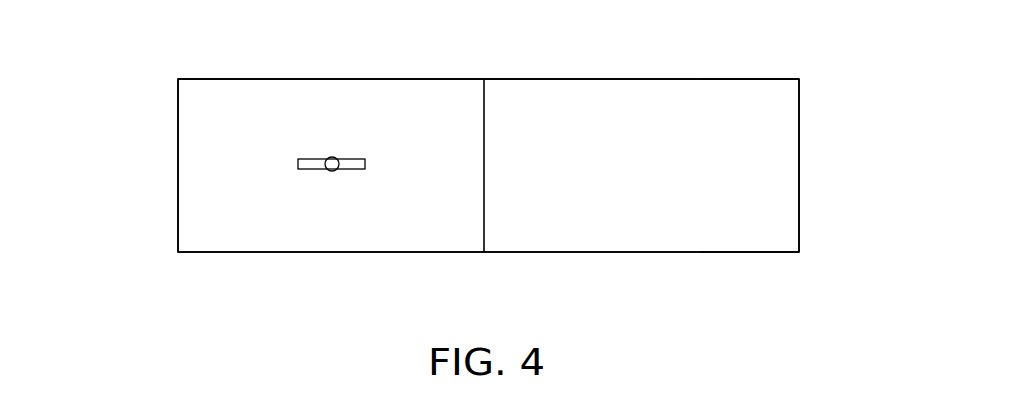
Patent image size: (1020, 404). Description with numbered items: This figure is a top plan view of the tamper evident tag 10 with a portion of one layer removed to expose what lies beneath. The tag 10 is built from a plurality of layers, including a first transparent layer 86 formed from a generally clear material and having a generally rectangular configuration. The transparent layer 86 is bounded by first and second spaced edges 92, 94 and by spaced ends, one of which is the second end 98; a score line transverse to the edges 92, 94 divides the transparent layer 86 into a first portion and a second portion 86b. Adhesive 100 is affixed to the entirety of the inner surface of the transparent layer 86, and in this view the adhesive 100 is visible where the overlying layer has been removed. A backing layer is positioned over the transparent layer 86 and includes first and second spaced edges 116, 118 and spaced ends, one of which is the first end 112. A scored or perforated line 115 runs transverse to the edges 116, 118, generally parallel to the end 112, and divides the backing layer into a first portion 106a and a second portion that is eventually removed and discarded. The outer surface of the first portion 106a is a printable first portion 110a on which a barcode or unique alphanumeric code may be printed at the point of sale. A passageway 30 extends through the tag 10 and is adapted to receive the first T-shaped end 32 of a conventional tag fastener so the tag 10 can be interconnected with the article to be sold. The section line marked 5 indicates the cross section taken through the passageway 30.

The tag 10 is at (143, 243).
The section line 5- 5 is at (178, 159).
The passageway 30 is at (341, 159).
The first T-shaped end 32 is at (309, 169).
The first transparent layer 86 is at (768, 256).
The second portion of transparent layer 86b is at (750, 75).
The first edge of transparent layer 92 is at (640, 79).
The second edge of transparent layer 94 is at (686, 252).
The second end of transparent layer 98 is at (799, 190).
The adhesive 100 is at (696, 190).
The first portion of backing layer 106a is at (228, 122).
The first portion of outer surface of backing layer 110a is at (450, 220).
The first end of backing layer 112 is at (178, 198).
The perforated line 115 is at (484, 170).
The first edge of backing layer 116 is at (327, 80).
The second edge of backing layer 118 is at (445, 252).